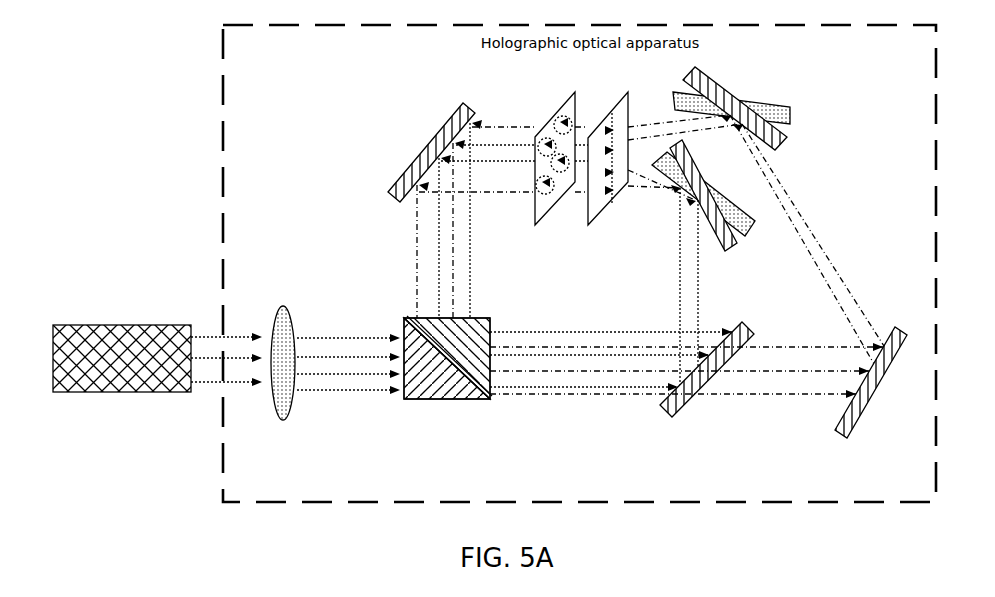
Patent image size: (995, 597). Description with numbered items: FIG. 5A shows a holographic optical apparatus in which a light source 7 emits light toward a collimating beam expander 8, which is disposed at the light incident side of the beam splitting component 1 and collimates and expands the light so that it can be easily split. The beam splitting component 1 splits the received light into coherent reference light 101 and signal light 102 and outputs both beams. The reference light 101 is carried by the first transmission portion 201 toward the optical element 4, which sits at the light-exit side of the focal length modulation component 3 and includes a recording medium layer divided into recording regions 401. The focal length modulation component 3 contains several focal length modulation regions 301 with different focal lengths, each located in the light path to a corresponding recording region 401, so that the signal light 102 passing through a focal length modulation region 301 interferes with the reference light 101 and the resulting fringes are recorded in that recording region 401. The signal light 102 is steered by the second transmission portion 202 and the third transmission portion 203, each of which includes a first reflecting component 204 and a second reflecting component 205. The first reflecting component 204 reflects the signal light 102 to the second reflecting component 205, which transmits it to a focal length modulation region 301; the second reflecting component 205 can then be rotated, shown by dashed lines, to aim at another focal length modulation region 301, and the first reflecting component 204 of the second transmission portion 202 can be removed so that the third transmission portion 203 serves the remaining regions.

The light source 7 is at (120, 325).
The collimating beam expander 8 is at (285, 307).
The beam splitting component 1 is at (441, 400).
The first transmission portion 201 is at (425, 152).
The reference light 101 is at (413, 288).
The optical element 4 is at (550, 174).
The recording region 401 is at (543, 216).
The focal length modulation component 3 is at (613, 166).
The focal length modulation region 301 is at (603, 210).
The second reflecting component 205 is at (740, 93).
The third transmission portion 203 is at (890, 245).
The second transmission portion 202 is at (778, 262).
The first reflecting component 204 is at (770, 306).
The signal light 102 is at (612, 388).